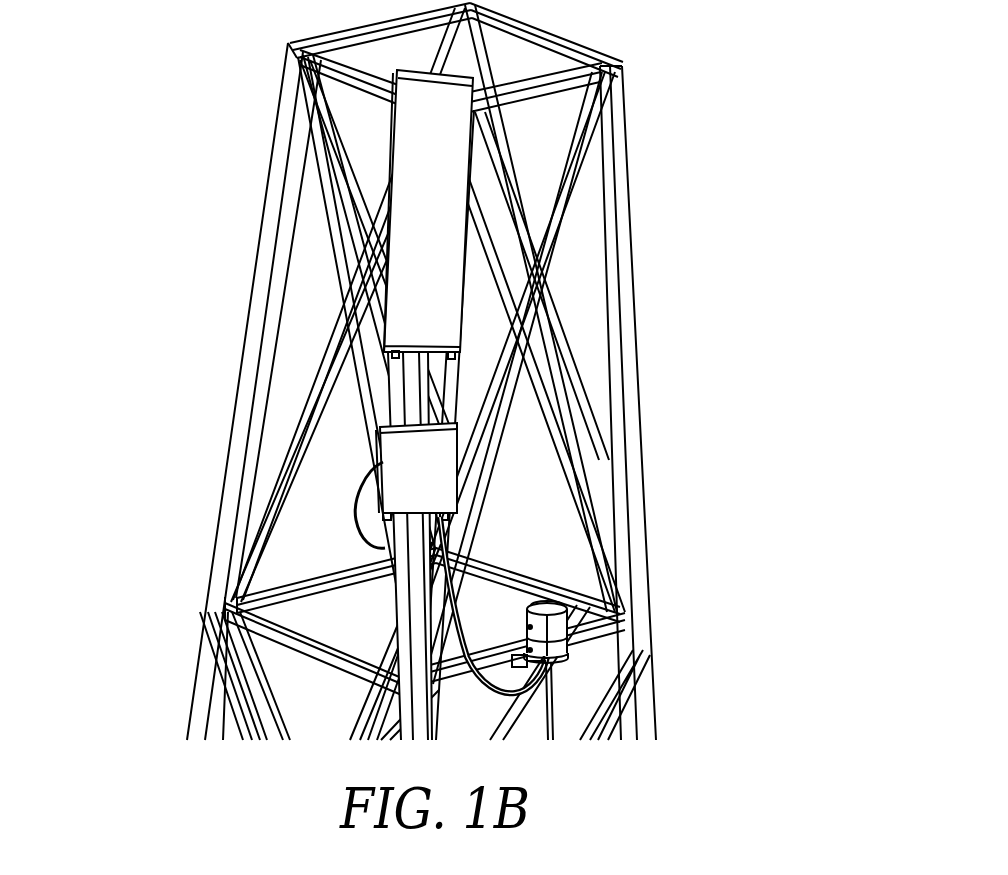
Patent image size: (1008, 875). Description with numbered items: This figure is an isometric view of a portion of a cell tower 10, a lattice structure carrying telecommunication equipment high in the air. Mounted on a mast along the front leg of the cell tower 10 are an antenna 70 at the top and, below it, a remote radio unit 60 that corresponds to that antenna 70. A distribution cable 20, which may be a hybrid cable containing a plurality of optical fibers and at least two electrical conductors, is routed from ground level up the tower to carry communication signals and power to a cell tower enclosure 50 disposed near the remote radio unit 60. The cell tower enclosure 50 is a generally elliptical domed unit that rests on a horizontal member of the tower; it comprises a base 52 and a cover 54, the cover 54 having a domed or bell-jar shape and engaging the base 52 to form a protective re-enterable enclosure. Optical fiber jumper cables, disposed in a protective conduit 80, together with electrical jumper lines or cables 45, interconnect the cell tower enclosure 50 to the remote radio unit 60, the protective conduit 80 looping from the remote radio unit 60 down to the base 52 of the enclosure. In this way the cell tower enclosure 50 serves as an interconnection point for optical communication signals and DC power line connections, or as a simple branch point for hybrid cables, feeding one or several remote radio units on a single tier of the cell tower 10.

The cell tower 10 is at (475, 371).
The distribution cable 20 is at (550, 698).
The electrical jumper lines or cables 45 is at (453, 632).
The cell tower enclosure 50 is at (628, 595).
The base 52 is at (548, 660).
The cover 54 is at (547, 600).
The remote radio unit 60 is at (432, 472).
The antenna 70 is at (437, 155).
The protective conduit 80 is at (450, 612).